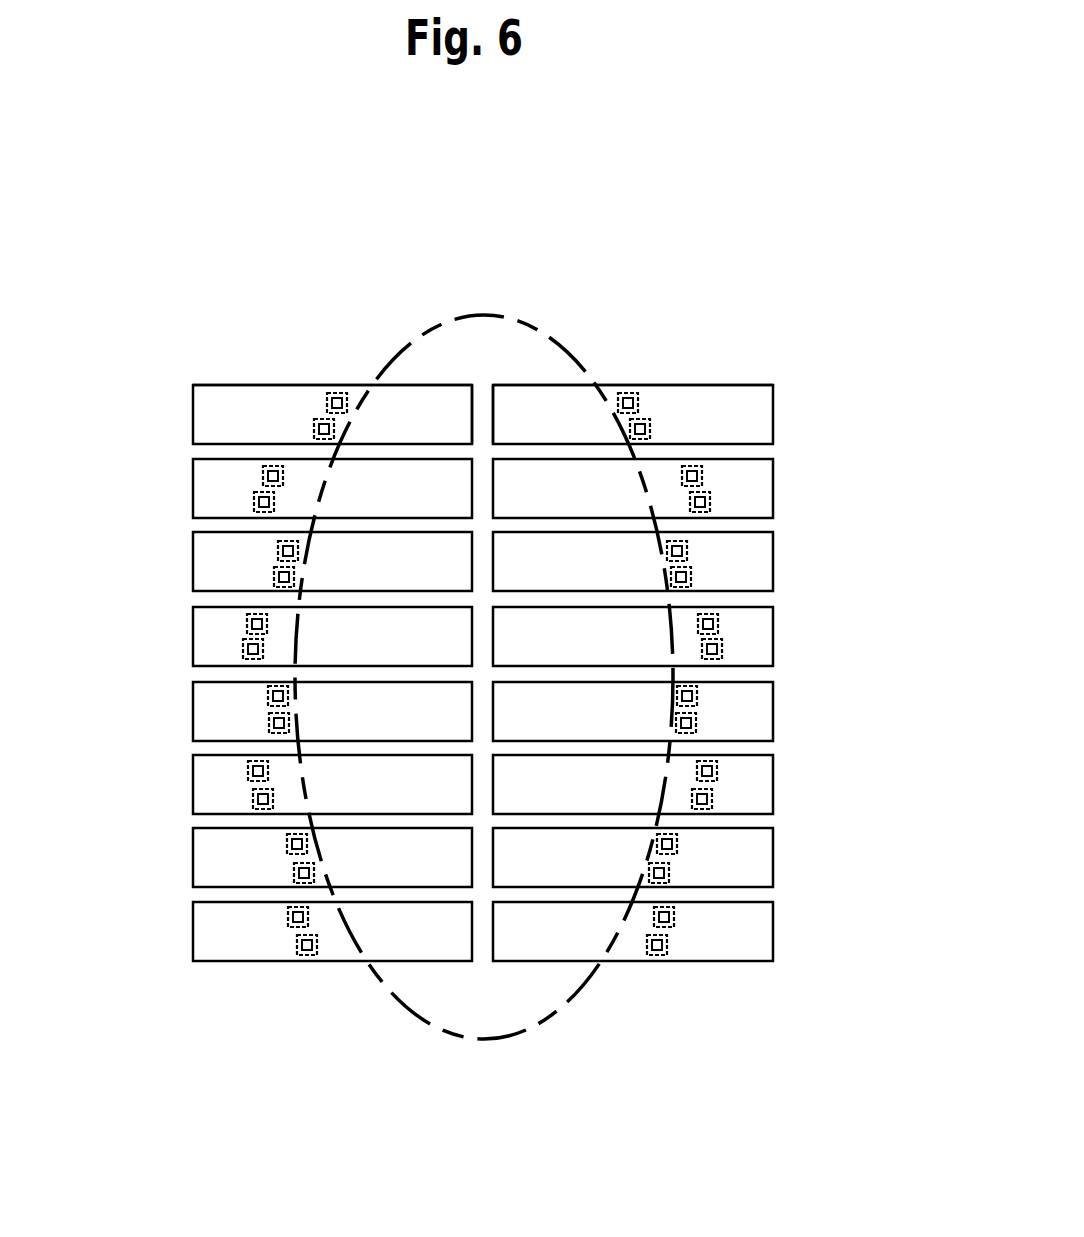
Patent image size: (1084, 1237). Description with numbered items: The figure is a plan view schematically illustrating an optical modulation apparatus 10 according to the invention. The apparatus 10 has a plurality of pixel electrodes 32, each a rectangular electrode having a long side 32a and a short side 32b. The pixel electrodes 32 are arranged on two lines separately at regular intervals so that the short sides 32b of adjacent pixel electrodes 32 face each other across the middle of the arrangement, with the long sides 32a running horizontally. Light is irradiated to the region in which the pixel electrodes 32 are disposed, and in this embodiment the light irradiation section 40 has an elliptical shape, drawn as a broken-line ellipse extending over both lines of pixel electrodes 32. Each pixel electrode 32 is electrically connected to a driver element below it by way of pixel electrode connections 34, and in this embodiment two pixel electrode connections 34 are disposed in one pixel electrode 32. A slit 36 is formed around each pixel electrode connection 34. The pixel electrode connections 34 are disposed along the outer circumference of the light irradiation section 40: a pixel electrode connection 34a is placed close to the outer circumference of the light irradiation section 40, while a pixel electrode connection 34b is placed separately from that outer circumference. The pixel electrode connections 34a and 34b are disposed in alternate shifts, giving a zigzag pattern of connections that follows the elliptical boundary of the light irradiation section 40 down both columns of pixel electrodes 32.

The optical modulation apparatus 10 is at (800, 240).
The pixel electrode 32 is at (227, 403).
The long side 32a is at (358, 385).
The short side 32b is at (460, 400).
The pixel electrode connection 34 is at (320, 412).
The pixel electrode connection 34a is at (268, 723).
The pixel electrode connection 34b is at (255, 799).
The slit 36 is at (316, 428).
The light irradiation section 40 is at (518, 317).